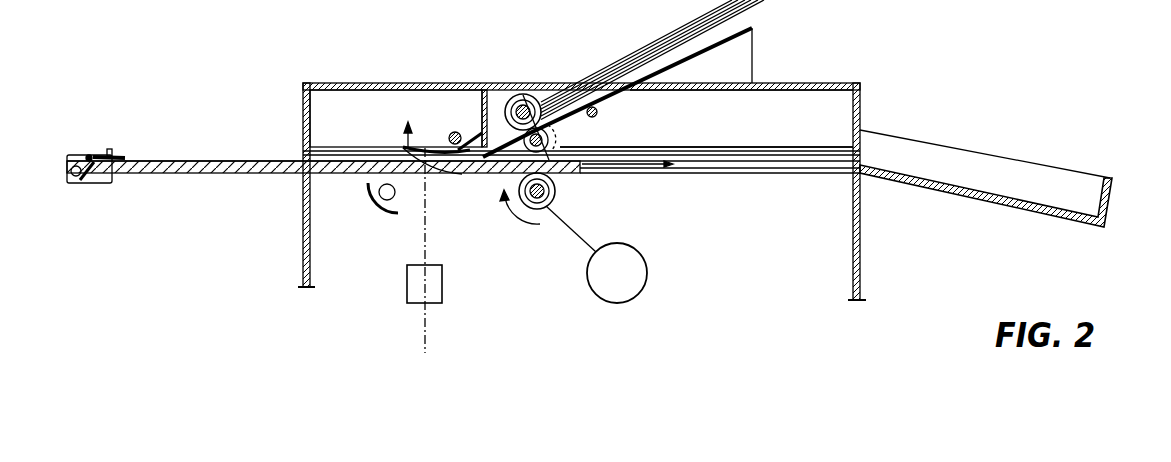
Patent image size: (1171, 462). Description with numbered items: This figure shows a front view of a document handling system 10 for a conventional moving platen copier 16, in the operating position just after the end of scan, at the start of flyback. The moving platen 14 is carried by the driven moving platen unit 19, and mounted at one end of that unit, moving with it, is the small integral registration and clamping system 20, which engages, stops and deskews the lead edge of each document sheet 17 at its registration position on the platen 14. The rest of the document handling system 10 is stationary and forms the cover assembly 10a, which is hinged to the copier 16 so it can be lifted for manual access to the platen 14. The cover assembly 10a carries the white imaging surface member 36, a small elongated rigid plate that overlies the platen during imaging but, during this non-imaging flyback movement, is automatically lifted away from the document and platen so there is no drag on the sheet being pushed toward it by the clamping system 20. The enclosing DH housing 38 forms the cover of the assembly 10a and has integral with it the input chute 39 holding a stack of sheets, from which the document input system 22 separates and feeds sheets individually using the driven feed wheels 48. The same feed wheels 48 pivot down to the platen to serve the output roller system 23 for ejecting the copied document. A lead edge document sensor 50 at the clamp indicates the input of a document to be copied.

The document handling system 10 is at (492, 71).
The cover assembly 10a is at (558, 92).
The moving platen 14 is at (226, 170).
The moving platen copier 16 is at (264, 101).
The document sheet 17 is at (237, 158).
The moving platen unit 19 is at (596, 194).
The registration and clamping system 20 is at (96, 155).
The document input system 22 is at (541, 85).
The output roller system 23 is at (578, 140).
The imaging surface member 36 is at (423, 152).
The DH housing 38 is at (780, 83).
The input chute 39 is at (630, 80).
The feed wheels 48 is at (527, 148).
The lead edge document sensor 50 is at (110, 153).